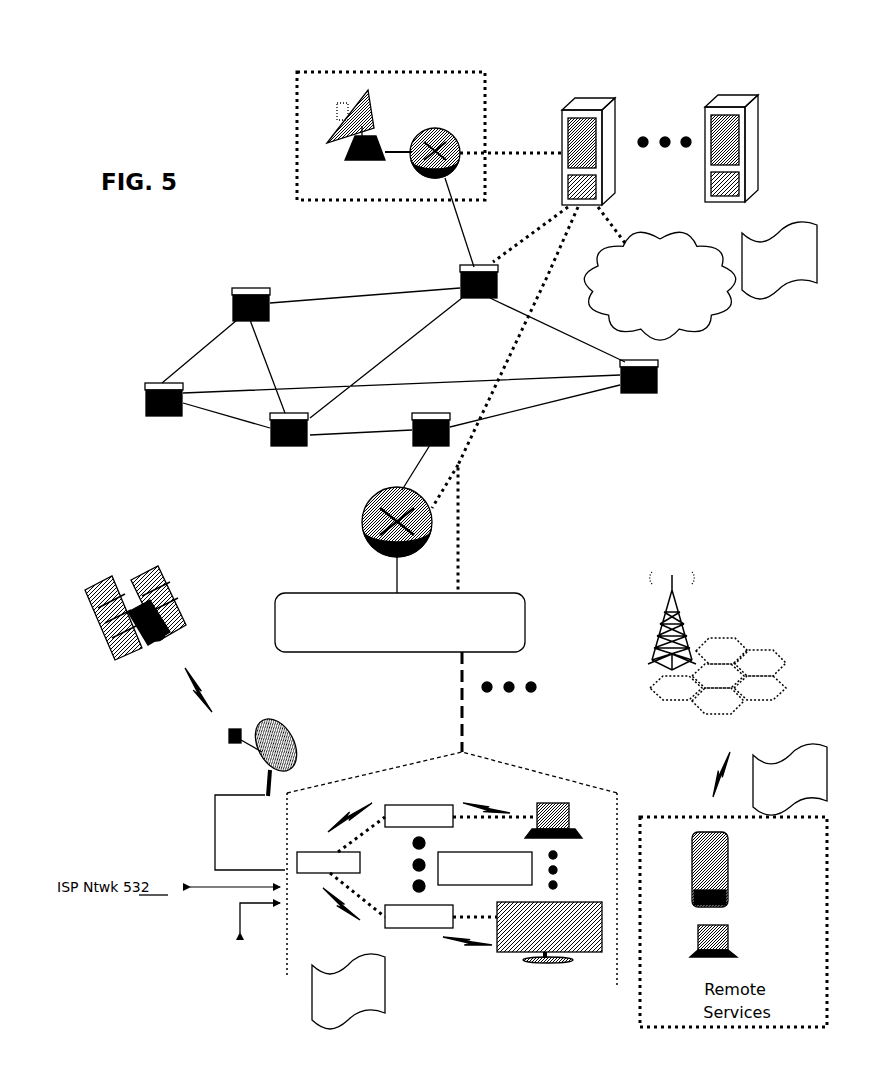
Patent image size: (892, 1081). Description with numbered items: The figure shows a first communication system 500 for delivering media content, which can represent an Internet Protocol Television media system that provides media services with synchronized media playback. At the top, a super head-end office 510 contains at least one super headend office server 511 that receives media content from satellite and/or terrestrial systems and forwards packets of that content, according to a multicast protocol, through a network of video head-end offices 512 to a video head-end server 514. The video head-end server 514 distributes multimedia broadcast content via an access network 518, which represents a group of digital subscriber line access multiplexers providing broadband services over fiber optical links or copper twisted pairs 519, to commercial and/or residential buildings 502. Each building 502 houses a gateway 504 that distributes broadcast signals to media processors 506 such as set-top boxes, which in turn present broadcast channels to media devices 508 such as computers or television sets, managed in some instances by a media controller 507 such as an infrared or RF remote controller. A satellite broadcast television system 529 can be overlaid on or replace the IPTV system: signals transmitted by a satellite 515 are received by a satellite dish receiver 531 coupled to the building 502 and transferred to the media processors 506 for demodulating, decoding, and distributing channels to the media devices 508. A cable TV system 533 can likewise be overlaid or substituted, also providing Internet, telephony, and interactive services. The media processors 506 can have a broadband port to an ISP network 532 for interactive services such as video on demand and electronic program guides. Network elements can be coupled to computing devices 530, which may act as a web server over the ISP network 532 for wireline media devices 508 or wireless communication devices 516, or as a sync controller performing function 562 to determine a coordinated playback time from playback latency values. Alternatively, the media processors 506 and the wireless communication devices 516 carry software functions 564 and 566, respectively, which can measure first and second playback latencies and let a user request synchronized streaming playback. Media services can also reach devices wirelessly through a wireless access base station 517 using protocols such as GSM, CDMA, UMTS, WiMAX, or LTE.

The communication system 500 is at (157, 156).
The super head-end office 510 is at (297, 143).
The super headend office server 511 is at (412, 134).
The computing devices 530 is at (737, 92).
The ISP network 532 is at (644, 317).
The function 562 is at (743, 200).
The network of video head-end offices 512 is at (145, 400).
The video head-end server 514 is at (362, 528).
The access network 518 is at (526, 617).
The fiber optical links or copper twisted pairs 519 is at (460, 722).
The satellite 515 is at (96, 619).
The satellite broadcast television system 529 is at (210, 652).
The satellite dish receiver 531 is at (199, 793).
The cable TV system 533 is at (221, 993).
The buildings 502 is at (462, 993).
The gateway 504 is at (352, 872).
The media processors 506 is at (452, 825).
The media controller 507 is at (517, 877).
The media devices 508 is at (560, 802).
The software function 564 is at (362, 938).
The wireless access base station 517 is at (715, 640).
The wireless communication devices 516 is at (737, 845).
The software function 566 is at (727, 817).